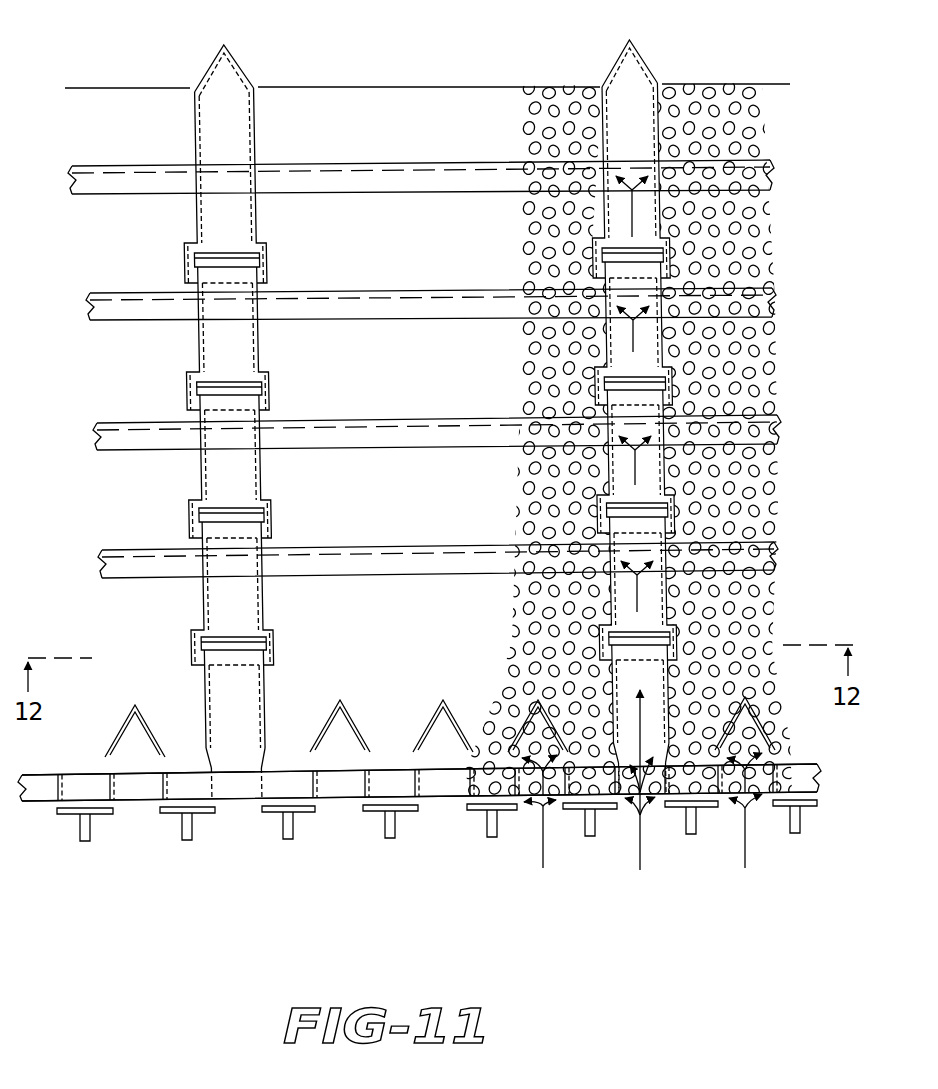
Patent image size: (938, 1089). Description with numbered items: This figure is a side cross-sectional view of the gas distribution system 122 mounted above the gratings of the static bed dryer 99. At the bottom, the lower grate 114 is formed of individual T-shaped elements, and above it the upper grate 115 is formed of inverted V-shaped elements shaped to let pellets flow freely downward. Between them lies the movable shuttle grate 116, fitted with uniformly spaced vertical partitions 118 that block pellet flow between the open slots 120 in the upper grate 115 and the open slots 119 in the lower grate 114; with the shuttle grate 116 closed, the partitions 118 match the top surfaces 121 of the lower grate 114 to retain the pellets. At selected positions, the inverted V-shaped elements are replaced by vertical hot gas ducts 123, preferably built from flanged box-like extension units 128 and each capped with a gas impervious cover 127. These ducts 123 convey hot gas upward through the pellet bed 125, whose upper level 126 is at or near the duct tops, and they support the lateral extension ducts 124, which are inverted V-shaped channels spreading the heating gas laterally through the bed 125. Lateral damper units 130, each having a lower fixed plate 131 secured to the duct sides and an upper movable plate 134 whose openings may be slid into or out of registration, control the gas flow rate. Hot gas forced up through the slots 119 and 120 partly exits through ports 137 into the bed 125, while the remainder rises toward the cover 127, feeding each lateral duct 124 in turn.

The static bed dryer 99 is at (767, 240).
The lower grate 114 is at (279, 829).
The upper grate 115 is at (125, 730).
The shuttle grate 116 is at (33, 803).
The vertical partitions 118 is at (115, 783).
The open slots 119 is at (336, 798).
The open slots 120 is at (123, 774).
The top surfaces 121 is at (262, 808).
The gas distribution system 122 is at (666, 439).
The vertical hot gas ducts 123 is at (196, 344).
The lateral extension ducts 124 is at (444, 290).
The pellet bed 125 is at (557, 383).
The upper level 126 is at (403, 87).
The gas impervious covers 127 is at (240, 62).
The flanged box-like extension units 128 is at (258, 359).
The lateral damper units 130 is at (230, 270).
The lower fixed plate 131 is at (215, 676).
The upper movable plate 134 is at (224, 255).
The ports 137 is at (258, 760).